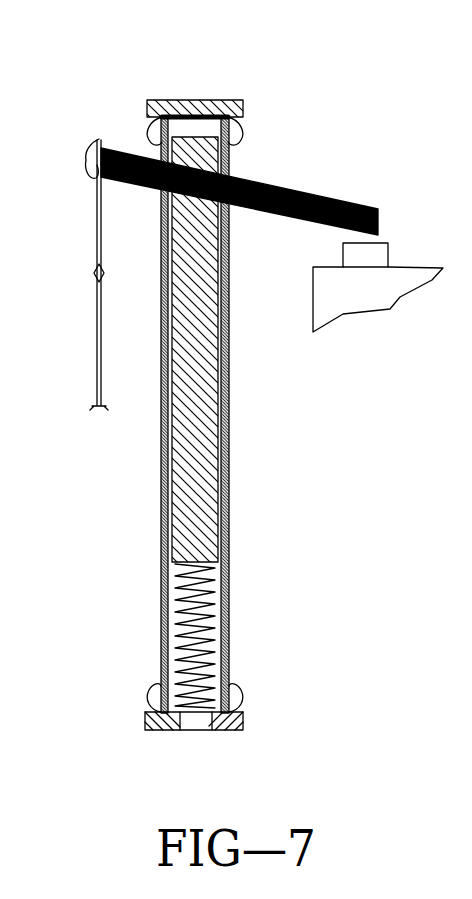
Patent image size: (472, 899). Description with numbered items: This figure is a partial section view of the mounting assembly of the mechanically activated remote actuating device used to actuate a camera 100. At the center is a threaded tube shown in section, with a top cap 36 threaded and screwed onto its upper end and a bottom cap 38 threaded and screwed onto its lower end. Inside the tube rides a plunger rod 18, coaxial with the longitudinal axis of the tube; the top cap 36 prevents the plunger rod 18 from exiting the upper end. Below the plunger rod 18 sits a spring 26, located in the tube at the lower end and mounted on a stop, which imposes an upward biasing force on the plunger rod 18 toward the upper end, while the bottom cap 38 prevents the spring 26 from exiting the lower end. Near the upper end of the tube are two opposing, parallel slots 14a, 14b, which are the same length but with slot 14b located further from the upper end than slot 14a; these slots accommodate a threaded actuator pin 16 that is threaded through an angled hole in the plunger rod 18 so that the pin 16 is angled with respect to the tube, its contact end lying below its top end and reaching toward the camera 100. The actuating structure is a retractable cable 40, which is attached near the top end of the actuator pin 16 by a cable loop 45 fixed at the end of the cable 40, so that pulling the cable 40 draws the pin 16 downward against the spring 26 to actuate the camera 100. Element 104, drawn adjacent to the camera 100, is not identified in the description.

The top cap 36 is at (194, 100).
The opposing slot 14a is at (167, 218).
The opposing slot 14b is at (226, 218).
The threaded actuator pin 16 is at (284, 193).
The plunger rod 18 is at (203, 473).
The spring 26 is at (207, 632).
The bottom cap 38 is at (213, 728).
The retractable cable 40 is at (98, 378).
The cable loop 45 is at (97, 218).
The camera 100 is at (347, 295).
The mounting block 104 is at (388, 252).